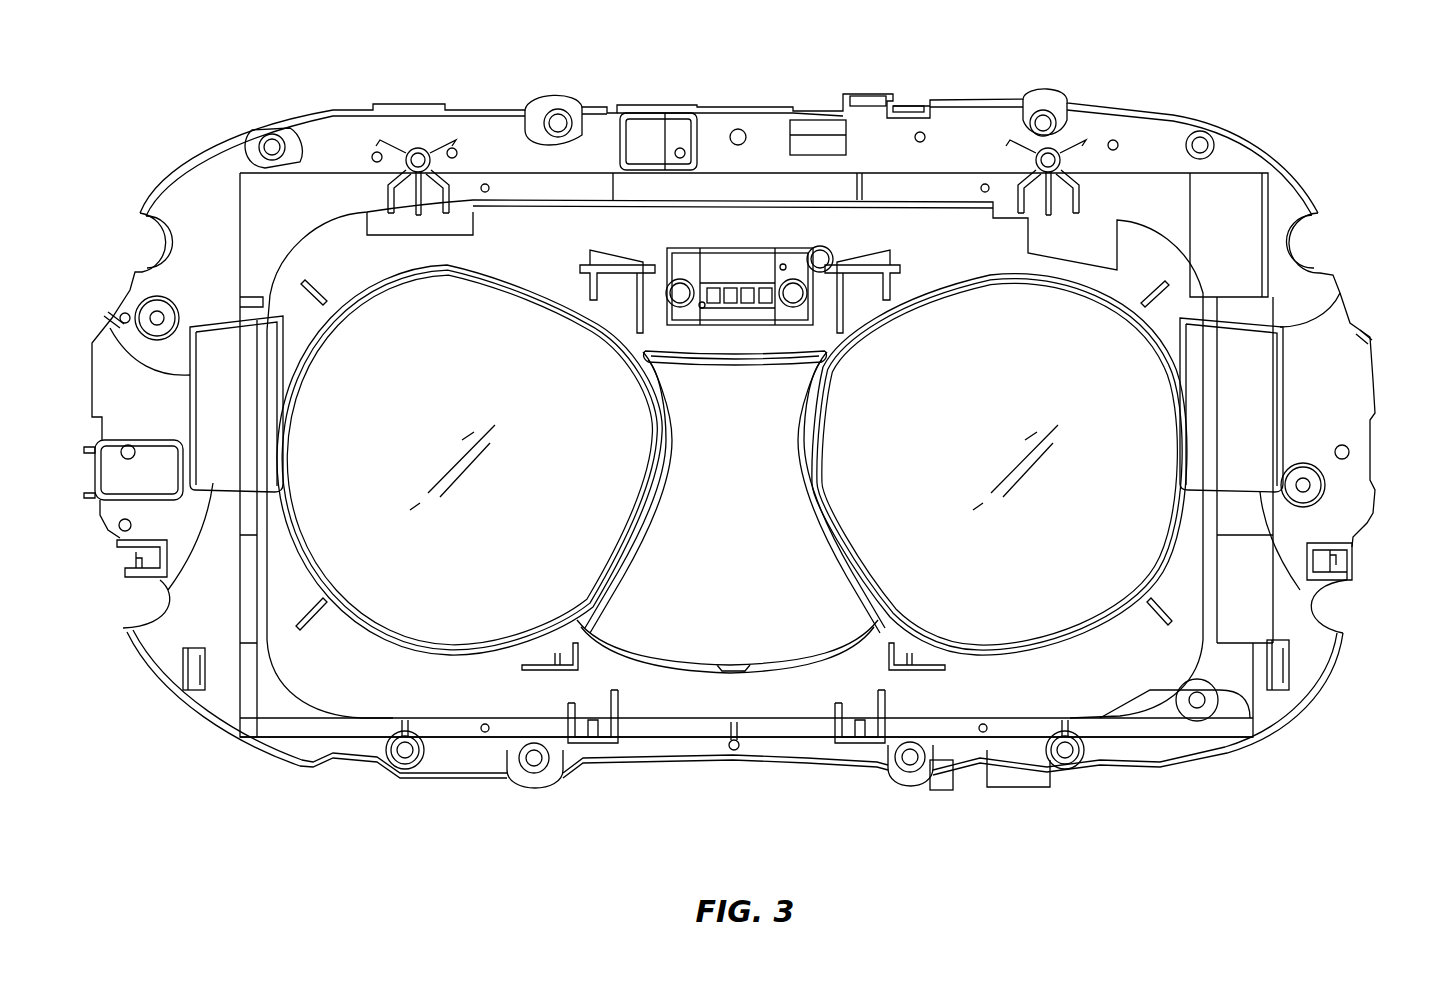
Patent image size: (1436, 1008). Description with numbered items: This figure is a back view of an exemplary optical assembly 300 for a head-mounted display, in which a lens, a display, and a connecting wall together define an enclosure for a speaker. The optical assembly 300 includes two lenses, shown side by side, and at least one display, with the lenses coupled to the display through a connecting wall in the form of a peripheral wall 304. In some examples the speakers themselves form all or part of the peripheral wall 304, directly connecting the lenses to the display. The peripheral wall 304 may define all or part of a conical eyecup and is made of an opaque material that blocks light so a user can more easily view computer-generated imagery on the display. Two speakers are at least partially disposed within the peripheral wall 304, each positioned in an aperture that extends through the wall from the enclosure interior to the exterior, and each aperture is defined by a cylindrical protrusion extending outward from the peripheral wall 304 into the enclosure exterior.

The optical assembly 300 is at (182, 40).
The peripheral wall 304 is at (330, 670).